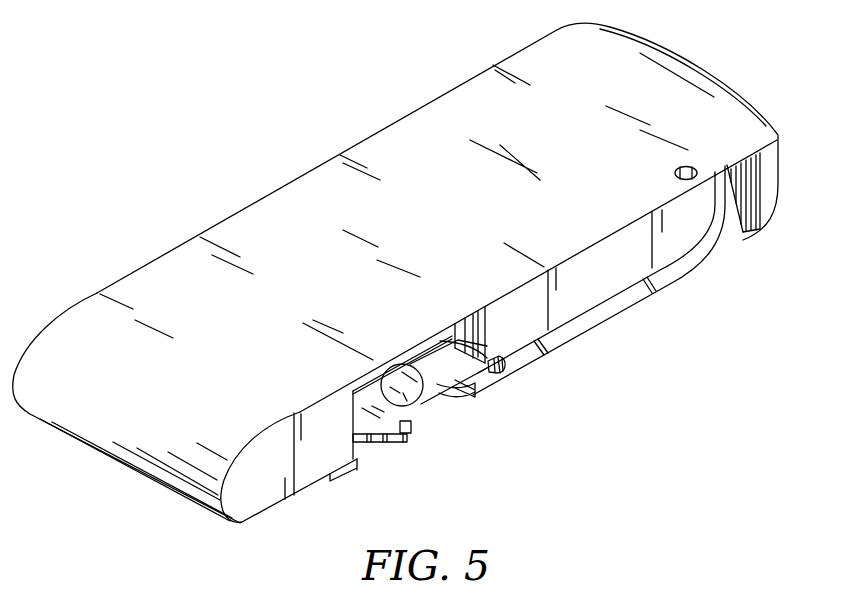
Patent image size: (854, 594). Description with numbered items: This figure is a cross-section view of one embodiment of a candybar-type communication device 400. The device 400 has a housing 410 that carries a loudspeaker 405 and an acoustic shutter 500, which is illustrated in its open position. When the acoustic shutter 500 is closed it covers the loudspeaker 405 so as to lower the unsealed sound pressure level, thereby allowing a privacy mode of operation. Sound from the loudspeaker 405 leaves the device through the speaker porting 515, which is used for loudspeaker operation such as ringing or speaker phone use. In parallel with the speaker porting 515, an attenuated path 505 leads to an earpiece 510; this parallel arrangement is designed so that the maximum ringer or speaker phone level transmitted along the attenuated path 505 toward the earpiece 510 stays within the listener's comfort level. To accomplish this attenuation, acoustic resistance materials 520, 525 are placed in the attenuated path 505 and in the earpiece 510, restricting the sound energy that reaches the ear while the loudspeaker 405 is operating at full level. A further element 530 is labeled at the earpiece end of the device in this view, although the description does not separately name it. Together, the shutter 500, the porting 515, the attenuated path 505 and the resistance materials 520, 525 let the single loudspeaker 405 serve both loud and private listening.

The candybar-type communication device 400 is at (183, 128).
The housing 410 is at (290, 197).
The loudspeaker 405 is at (422, 368).
The acoustic shutter 500 is at (450, 397).
The attenuated path 505 is at (718, 246).
The earpiece 510 is at (728, 82).
The speaker porting 515 is at (388, 443).
The acoustic resistance material 520 is at (504, 370).
The acoustic resistance material 525 is at (716, 174).
The vent grille 530 is at (778, 157).